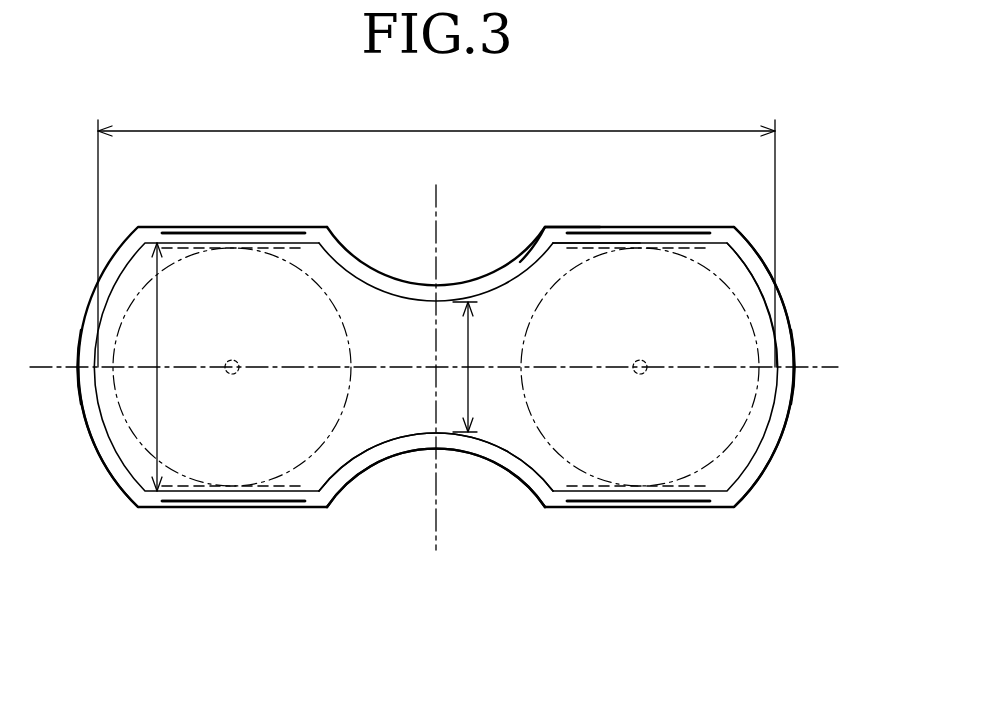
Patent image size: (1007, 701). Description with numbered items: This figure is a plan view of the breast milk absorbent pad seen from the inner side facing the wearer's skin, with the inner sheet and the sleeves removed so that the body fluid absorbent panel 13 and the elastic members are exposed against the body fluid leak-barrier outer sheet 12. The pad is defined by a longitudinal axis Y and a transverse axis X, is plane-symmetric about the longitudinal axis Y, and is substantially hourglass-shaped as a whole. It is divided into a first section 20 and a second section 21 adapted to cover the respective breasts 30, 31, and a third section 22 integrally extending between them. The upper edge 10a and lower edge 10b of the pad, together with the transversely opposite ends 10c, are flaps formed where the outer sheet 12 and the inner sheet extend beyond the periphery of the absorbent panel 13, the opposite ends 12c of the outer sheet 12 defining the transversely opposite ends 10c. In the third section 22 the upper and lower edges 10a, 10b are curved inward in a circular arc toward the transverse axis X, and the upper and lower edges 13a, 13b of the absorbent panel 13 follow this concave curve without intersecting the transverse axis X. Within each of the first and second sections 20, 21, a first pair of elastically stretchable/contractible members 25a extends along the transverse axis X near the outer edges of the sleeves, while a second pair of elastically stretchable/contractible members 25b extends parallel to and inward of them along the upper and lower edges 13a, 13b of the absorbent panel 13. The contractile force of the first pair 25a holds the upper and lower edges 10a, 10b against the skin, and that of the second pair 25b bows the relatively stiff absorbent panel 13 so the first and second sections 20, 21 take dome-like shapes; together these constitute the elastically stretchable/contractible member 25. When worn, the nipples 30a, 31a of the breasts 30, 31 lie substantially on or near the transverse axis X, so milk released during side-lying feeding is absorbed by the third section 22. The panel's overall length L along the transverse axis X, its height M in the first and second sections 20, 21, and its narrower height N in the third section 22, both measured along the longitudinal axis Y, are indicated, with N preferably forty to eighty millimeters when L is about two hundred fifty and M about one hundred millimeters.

The upper edge 10a is at (548, 227).
The lower edge 10b is at (495, 456).
The transversely opposite end 10c is at (87, 388).
The body fluid leak-barrier outer sheet 12 is at (762, 277).
The opposite end of the outer sheet 12c is at (108, 450).
The body fluid absorbent panel 13 is at (735, 273).
The upper edge of the body fluid absorbent panel 13a is at (598, 246).
The lower edge of the body fluid absorbent panel 13b is at (400, 437).
The first section 20 is at (78, 594).
The second section 21 is at (792, 594).
The third section 22 is at (542, 594).
The elastically stretchable/contractible member 25 is at (175, 182).
The first pair of elastically stretchable/contractible members 25a is at (198, 233).
The second pair of elastically stretchable/contractible members 25b is at (252, 248).
The breast 30 is at (262, 463).
The nipple 30a is at (237, 360).
The breast 31 is at (683, 463).
The nipple 31a is at (645, 360).
The dimension of the body fluid absorbent panel L is at (438, 131).
The dimension of the body fluid absorbent panel in the first and second sections M is at (157, 306).
The dimension of the body fluid absorbent panel in the third section N is at (468, 327).
The transverse axis X is at (43, 363).
The longitudinal axis Y is at (436, 187).